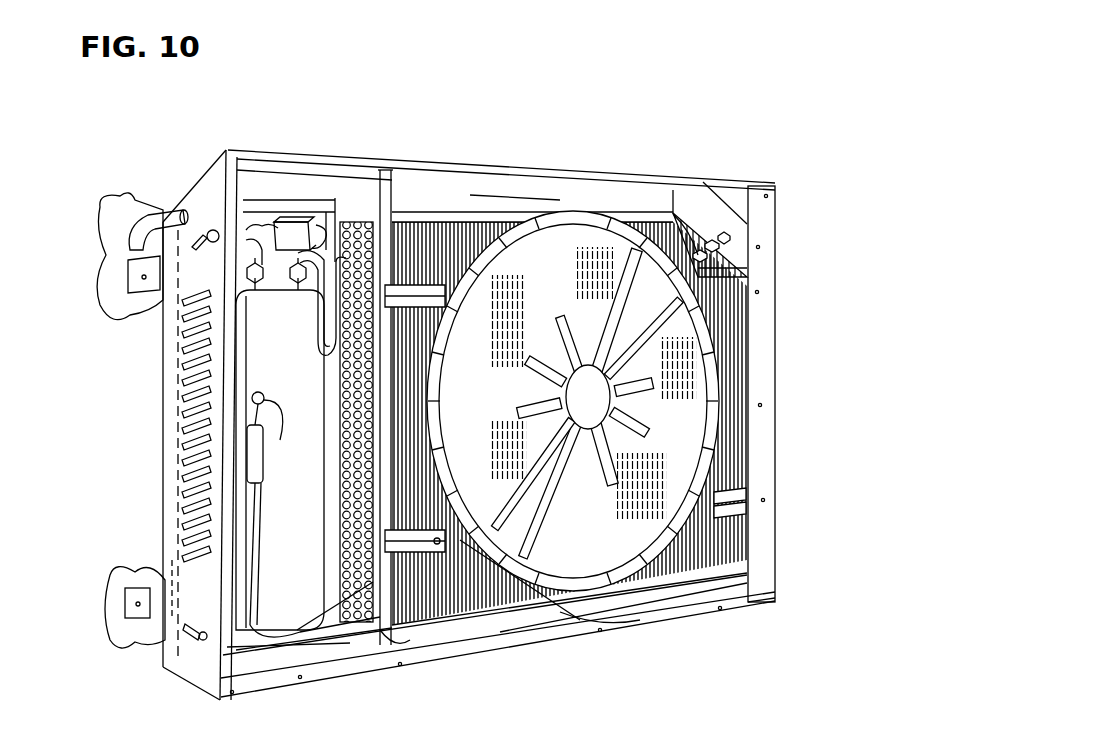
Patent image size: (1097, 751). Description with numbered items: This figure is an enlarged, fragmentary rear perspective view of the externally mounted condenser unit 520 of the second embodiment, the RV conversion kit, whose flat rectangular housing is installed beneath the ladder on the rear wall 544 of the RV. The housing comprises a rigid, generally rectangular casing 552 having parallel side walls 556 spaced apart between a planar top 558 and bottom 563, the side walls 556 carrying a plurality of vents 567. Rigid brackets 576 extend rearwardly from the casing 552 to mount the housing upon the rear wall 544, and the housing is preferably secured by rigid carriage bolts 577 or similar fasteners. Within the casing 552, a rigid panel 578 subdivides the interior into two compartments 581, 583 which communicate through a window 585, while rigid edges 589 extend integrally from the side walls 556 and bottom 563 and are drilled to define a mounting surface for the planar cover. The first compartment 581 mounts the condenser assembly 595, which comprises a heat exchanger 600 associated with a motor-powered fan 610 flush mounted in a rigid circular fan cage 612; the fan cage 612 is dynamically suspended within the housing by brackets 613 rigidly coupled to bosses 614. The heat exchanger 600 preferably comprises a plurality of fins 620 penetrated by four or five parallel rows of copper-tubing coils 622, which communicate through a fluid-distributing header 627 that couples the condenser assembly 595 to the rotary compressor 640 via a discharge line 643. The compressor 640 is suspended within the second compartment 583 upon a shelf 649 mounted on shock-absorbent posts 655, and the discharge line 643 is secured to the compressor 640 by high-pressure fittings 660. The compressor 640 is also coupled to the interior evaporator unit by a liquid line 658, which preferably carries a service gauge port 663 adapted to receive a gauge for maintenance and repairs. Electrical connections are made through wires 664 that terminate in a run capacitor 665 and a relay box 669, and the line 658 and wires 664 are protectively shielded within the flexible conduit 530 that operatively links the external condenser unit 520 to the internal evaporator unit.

The condenser unit 520 is at (882, 124).
The flexible conduit 530 is at (168, 214).
The rear wall 544 is at (138, 205).
The casing 552 is at (505, 152).
The side walls 556 is at (172, 392).
The top 558 is at (555, 180).
The bottom 563 is at (712, 600).
The vents 567 is at (190, 474).
The brackets 576 is at (135, 305).
The carriage bolts 577 is at (195, 250).
The panel 578 is at (447, 656).
The compartment 581 is at (522, 196).
The compartment 583 is at (332, 192).
The window 585 is at (358, 205).
The edges 589 is at (226, 350).
The condenser assembly 595 is at (740, 345).
The heat exchanger 600 is at (725, 547).
The fan 610 is at (548, 391).
The fan cage 612 is at (716, 438).
The brackets 613 is at (752, 272).
The bosses 614 is at (736, 500).
The fins 620 is at (705, 245).
The coils 622 is at (673, 212).
The header 627 is at (292, 222).
The rotary compressor 640 is at (282, 505).
The discharge line 643 is at (320, 352).
The shelf 649 is at (317, 652).
The shock-absorbent posts 655 is at (382, 657).
The liquid line 658 is at (226, 420).
The high-pressure fittings 660 is at (268, 272).
The service gauge port 663 is at (265, 405).
The wires 664 is at (240, 205).
The run capacitor 665 is at (243, 224).
The relay box 669 is at (262, 216).